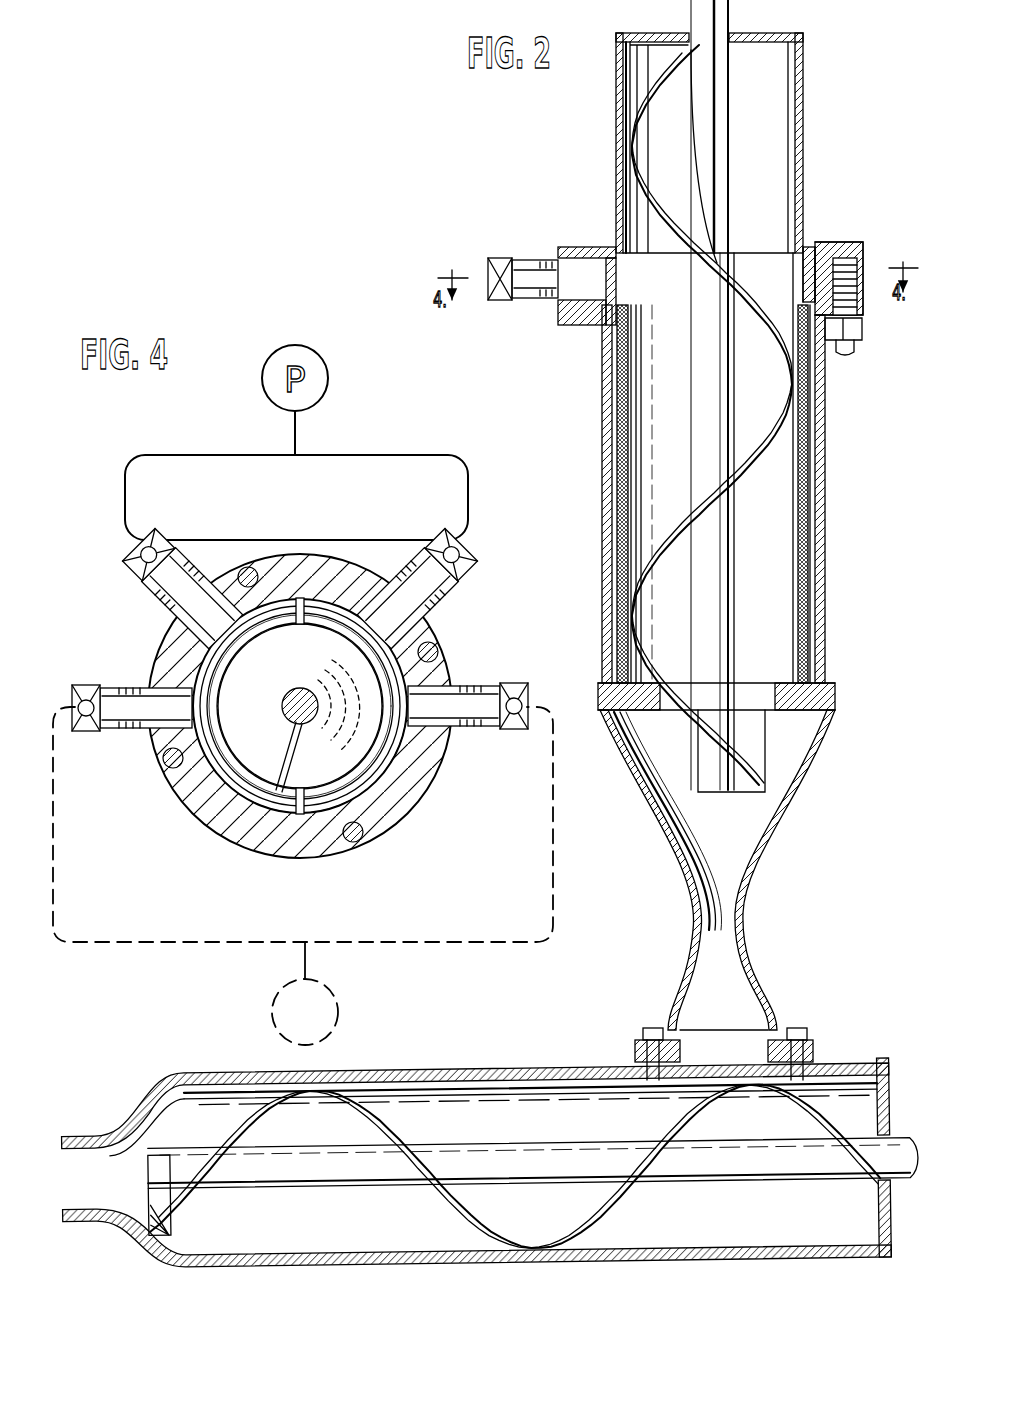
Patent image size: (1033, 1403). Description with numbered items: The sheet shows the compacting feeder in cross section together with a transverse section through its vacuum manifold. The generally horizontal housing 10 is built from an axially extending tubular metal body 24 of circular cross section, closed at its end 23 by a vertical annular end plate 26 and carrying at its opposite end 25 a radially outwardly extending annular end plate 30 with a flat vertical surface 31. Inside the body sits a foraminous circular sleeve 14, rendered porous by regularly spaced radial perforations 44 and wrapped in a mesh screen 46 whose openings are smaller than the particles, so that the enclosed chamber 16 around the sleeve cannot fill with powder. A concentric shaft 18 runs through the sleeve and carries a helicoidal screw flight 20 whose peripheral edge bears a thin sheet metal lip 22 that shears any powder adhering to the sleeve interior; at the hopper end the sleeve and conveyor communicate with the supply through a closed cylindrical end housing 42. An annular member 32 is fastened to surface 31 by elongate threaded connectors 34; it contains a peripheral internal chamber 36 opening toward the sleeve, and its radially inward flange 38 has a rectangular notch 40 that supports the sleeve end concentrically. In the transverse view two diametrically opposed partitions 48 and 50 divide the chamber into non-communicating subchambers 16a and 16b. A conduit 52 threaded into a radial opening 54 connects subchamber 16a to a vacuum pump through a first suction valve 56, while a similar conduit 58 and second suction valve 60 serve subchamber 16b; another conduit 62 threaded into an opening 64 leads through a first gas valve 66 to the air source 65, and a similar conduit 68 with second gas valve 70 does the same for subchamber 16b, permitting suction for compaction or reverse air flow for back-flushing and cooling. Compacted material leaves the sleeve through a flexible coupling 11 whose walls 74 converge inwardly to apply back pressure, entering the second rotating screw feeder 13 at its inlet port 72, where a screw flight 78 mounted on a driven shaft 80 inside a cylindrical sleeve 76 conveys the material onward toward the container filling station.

In FIG. 2, the housing 10 is at (840, 507).
In FIG. 4, the housing 10 is at (380, 850).
In FIG. 2, the flexible coupling 11 is at (775, 878).
In FIG. 2, the second rotating screw feeder 13 is at (836, 1062).
In FIG. 2, the foraminous circular sleeve 14 is at (620, 418).
In FIG. 4, the foraminous circular sleeve 14 is at (305, 620).
In FIG. 2, the chamber 16 is at (620, 527).
In FIG. 4, the subchamber 16a is at (393, 760).
In FIG. 4, the subchamber 16b is at (215, 773).
In FIG. 2, the shaft 18 is at (713, 208).
In FIG. 2, the screw flight 20 is at (660, 600).
In FIG. 2, the thin sheet metal lip 22 is at (640, 650).
In FIG. 2, the end of tube 23 is at (830, 672).
In FIG. 2, the tubular metal body 24 is at (603, 460).
In FIG. 2, the end of sleeve 25 is at (608, 331).
In FIG. 2, the annular end plate 26 is at (607, 685).
In FIG. 2, the annular end plate 30 is at (565, 326).
In FIG. 2, the flat vertical surface 31 is at (556, 309).
In FIG. 2, the annular member 32 is at (845, 250).
In FIG. 4, the annular member 32 is at (326, 576).
In FIG. 2, the elongate threaded connectors 34 is at (862, 311).
In FIG. 2, the internal chamber 36 is at (853, 270).
In FIG. 2, the flange 38 is at (821, 245).
In FIG. 2, the rectangular notch 40 is at (806, 247).
In FIG. 2, the closed cylindrical end housing 42 is at (801, 182).
In FIG. 2, the radial perforations 44 is at (795, 495).
In FIG. 4, the radial perforations 44 is at (345, 626).
In FIG. 2, the mesh screen 46 is at (808, 450).
In FIG. 4, the mesh screen 46 is at (270, 790).
In FIG. 4, the partition 48 is at (291, 602).
In FIG. 4, the partition 50 is at (302, 820).
In FIG. 4, the conduit 52 is at (440, 601).
In FIG. 4, the radially extending opening 54 is at (372, 641).
In FIG. 4, the first suction valve 56 is at (466, 568).
In FIG. 4, the conduit 58 is at (186, 565).
In FIG. 4, the second suction valve 60 is at (130, 573).
In FIG. 4, the conduit 62 is at (478, 683).
In FIG. 4, the opening 64 is at (420, 706).
In FIG. 4, the air source 65 is at (338, 1004).
In FIG. 4, the first gas valve 66 is at (514, 684).
In FIG. 4, the conduit 68 is at (130, 688).
In FIG. 4, the second gas valve 70 is at (80, 690).
In FIG. 2, the inlet port 72 is at (728, 1062).
In FIG. 2, the walls 74 is at (700, 852).
In FIG. 2, the cylindrical sleeve 76 is at (525, 1072).
In FIG. 2, the screw flight 78 is at (630, 1186).
In FIG. 2, the shaft 80 is at (898, 1148).